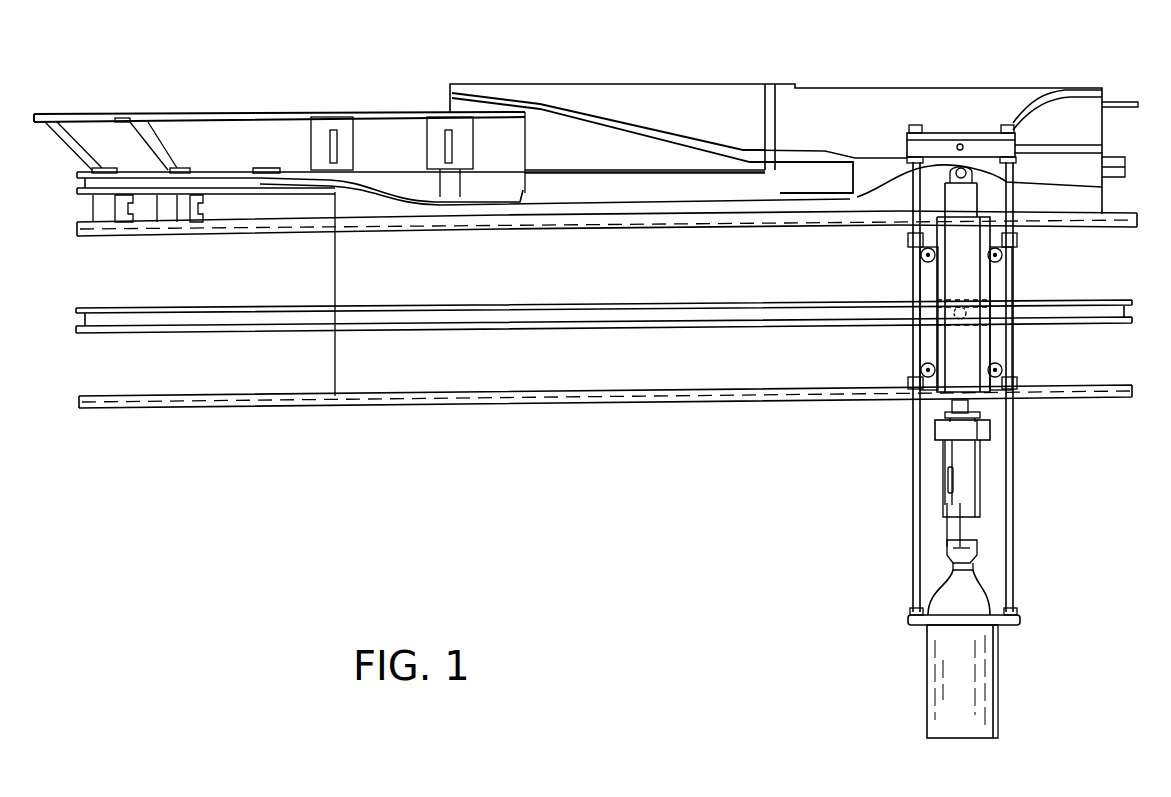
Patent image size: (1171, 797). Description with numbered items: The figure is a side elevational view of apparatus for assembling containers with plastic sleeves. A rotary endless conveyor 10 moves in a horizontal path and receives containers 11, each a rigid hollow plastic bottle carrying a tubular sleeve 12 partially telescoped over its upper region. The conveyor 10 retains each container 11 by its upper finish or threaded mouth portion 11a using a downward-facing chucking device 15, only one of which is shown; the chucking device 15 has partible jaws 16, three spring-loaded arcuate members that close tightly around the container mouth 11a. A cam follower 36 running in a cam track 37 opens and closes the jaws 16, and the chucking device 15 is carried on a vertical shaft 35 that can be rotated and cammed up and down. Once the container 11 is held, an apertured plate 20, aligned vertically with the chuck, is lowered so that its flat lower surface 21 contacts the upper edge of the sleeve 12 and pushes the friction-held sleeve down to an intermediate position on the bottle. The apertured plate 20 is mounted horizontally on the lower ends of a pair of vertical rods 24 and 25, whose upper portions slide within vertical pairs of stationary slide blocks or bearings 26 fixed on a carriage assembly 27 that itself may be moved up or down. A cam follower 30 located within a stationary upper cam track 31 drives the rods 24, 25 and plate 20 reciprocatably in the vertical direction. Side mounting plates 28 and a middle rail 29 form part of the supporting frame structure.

The rotary endless conveyor 10 is at (485, 410).
The container 11 is at (983, 595).
The upper finish or threaded mouth portion 11a is at (973, 565).
The tubular sleeve 12 is at (1000, 702).
The chucking device 15 is at (992, 485).
The partible jaws 16 is at (952, 553).
The apertured plate 20 is at (928, 620).
The flat lower surface 21 is at (1003, 625).
The vertical rod 24 is at (915, 447).
The vertical rod 25 is at (1015, 430).
The slide blocks or bearings 26 is at (1017, 382).
The carriage assembly 27 is at (898, 267).
The cylinder mounting plates 28 is at (910, 342).
The middle rail 29 is at (812, 318).
The cam follower 30 is at (965, 140).
The stationary upper cam track 31 is at (1067, 97).
The vertical shaft 35 is at (947, 402).
The cam follower 36 is at (967, 167).
The cam track 37 is at (1123, 163).